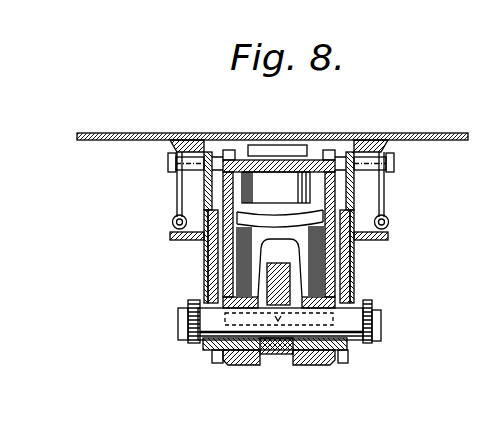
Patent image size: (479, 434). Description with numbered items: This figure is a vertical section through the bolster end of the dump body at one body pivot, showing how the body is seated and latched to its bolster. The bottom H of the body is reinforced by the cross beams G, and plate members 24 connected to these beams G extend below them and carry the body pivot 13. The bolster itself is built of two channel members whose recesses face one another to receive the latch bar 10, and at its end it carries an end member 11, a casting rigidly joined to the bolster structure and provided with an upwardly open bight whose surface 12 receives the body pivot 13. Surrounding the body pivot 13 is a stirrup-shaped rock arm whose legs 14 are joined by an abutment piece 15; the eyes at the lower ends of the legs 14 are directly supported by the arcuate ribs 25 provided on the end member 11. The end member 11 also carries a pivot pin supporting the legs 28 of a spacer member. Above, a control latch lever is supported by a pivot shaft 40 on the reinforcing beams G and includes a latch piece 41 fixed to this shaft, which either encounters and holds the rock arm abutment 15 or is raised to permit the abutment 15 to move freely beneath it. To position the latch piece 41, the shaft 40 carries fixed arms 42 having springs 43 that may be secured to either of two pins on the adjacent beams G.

The bottom of the body H is at (467, 133).
The cross beams G is at (206, 187).
The plate members 24 is at (212, 278).
The pivot shaft 40 is at (168, 162).
The latch piece 41 is at (258, 146).
The fixed arms 42 is at (176, 208).
The springs 43 is at (172, 223).
The legs of the rock arm 14 is at (227, 258).
The abutment piece 15 is at (281, 186).
The end member 11 is at (271, 238).
The latch bar 10 is at (279, 268).
The body pivot 13 is at (178, 323).
The surface of the bight 12 is at (279, 353).
The arcuate ribs 25 is at (232, 366).
The legs of the spacer member 28 is at (212, 358).